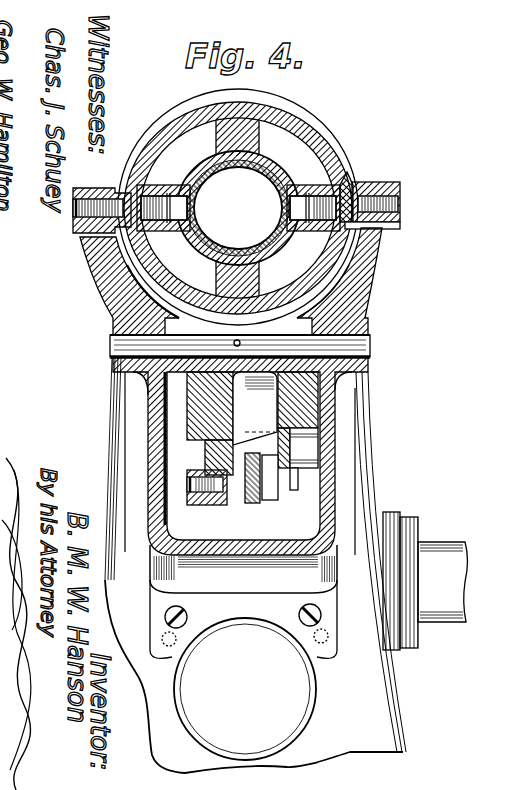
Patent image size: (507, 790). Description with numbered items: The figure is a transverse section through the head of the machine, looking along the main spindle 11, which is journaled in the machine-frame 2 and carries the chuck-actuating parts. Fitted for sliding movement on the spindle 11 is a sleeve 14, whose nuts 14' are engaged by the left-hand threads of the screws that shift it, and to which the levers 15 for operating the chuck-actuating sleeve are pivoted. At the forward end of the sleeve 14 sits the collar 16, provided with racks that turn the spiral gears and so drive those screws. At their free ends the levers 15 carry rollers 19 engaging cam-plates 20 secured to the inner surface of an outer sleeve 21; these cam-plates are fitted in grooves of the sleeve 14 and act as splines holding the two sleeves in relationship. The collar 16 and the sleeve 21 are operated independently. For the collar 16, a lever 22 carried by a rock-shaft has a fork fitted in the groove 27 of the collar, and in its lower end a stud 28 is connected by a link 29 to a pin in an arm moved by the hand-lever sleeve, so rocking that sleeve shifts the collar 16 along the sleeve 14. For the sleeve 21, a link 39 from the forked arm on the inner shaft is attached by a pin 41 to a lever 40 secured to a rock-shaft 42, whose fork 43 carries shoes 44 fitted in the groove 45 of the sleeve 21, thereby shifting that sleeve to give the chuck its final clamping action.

The machine-frame 2 is at (309, 636).
The main spindle 11 is at (255, 250).
The sleeve 14 is at (261, 183).
The nuts 14' is at (401, 190).
The levers 15 is at (383, 224).
The collar 16 is at (304, 135).
The rollers 19 is at (280, 208).
The cam-plates 20 is at (132, 187).
The sleeve 21 is at (333, 147).
The lever 22 is at (252, 414).
The groove 27 is at (355, 183).
The stud 28 is at (298, 480).
The link 29 is at (257, 493).
The link 39 is at (165, 468).
The lever 40 is at (197, 408).
The pin 41 is at (202, 500).
The rock-shaft 42 is at (113, 351).
The fork 43 is at (370, 251).
The shoes 44 is at (97, 237).
The groove 45 is at (162, 128).